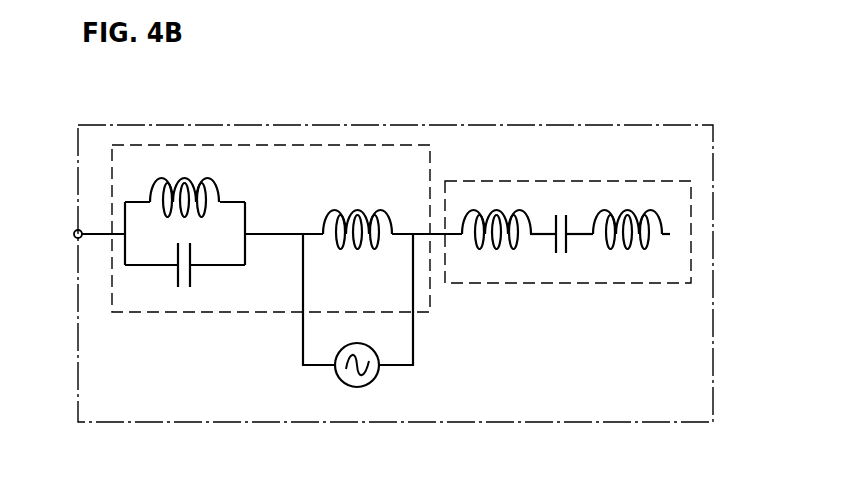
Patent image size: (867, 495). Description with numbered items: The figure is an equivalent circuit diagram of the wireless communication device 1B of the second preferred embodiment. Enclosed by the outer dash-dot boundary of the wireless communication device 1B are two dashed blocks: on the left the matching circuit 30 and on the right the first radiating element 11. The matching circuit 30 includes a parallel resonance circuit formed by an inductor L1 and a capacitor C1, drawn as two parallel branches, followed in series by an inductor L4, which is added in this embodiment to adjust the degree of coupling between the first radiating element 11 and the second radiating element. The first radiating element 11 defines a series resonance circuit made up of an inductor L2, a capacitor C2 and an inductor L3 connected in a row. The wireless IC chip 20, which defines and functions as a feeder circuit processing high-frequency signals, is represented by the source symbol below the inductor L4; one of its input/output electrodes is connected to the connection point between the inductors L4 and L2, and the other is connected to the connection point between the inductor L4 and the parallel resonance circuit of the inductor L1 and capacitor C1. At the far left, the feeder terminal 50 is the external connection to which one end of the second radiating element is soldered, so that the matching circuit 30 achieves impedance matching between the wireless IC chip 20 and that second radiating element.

The wireless communication device 1B is at (679, 125).
The matching circuit 30 is at (208, 145).
The first radiating element 11 is at (495, 181).
The wireless IC chip 20 is at (357, 387).
The feeder terminal 50 is at (74, 237).
The inductor L1 is at (184, 183).
The capacitor C1 is at (183, 277).
The inductor L4 is at (357, 217).
The inductor L2 is at (496, 217).
The capacitor C2 is at (561, 219).
The inductor L3 is at (627, 217).